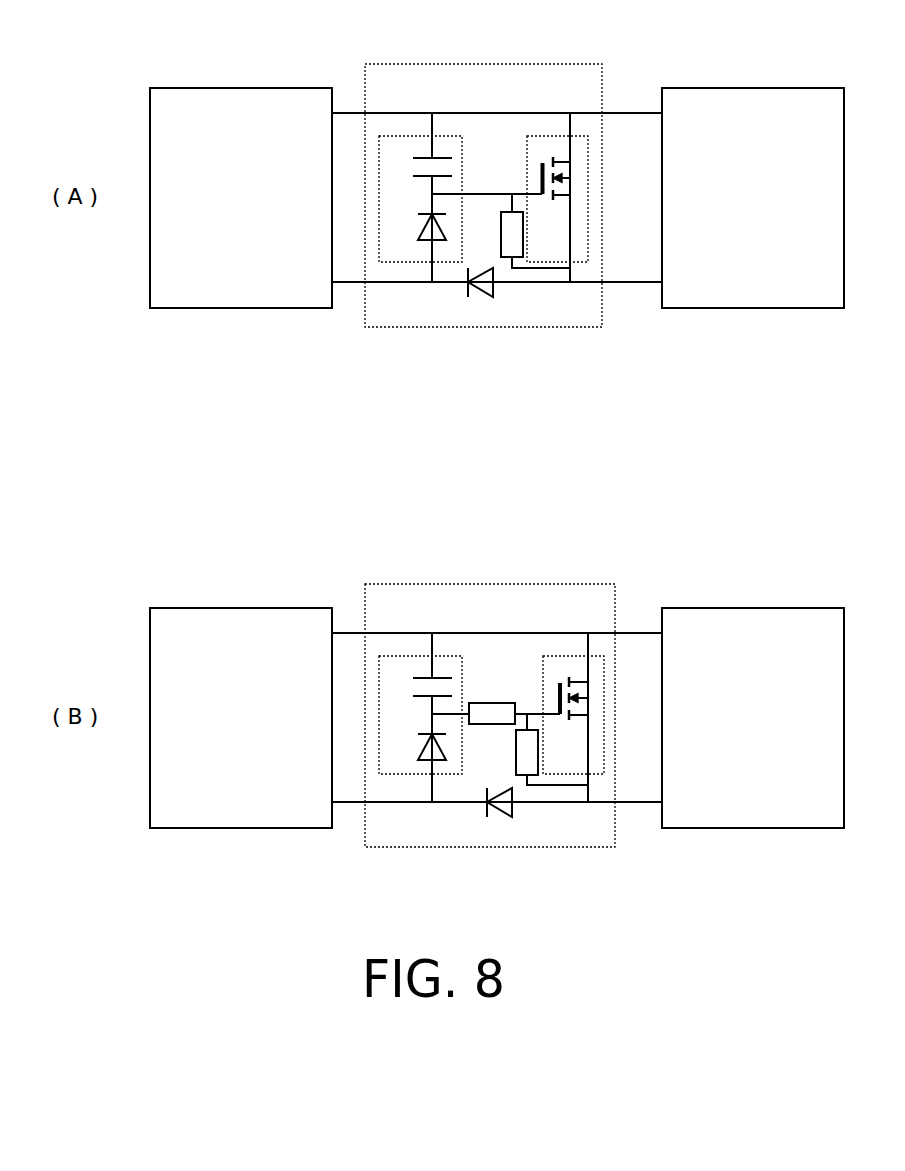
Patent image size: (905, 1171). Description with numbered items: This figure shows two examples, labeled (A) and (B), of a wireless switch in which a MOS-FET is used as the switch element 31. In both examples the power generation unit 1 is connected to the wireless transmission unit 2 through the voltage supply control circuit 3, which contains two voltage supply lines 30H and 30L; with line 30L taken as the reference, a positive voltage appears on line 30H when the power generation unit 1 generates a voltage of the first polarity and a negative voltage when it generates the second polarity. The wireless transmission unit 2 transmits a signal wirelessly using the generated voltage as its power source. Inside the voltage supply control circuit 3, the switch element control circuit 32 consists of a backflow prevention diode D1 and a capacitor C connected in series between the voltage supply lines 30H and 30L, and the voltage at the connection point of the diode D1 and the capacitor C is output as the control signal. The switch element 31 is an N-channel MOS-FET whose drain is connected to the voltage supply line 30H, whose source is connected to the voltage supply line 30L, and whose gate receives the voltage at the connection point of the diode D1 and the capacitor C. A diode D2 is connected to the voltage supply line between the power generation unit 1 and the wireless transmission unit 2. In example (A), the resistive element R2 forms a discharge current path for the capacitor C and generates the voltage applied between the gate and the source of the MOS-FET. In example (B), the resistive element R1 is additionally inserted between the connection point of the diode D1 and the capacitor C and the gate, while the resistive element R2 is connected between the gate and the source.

The power generation unit 1 is at (234, 100).
The wireless transmission unit 2 is at (752, 98).
The voltage supply control circuit 3 is at (468, 63).
The voltage supply line 30H is at (345, 112).
The voltage supply line 30L is at (348, 285).
The switch element 31 is at (548, 136).
The switch element control circuit 32 is at (408, 136).
The capacitor C is at (419, 457).
The backflow prevention diode D1 is at (416, 487).
The diode D2 is at (506, 555).
The resistive element R1 is at (496, 700).
The resistive element R2 is at (529, 489).